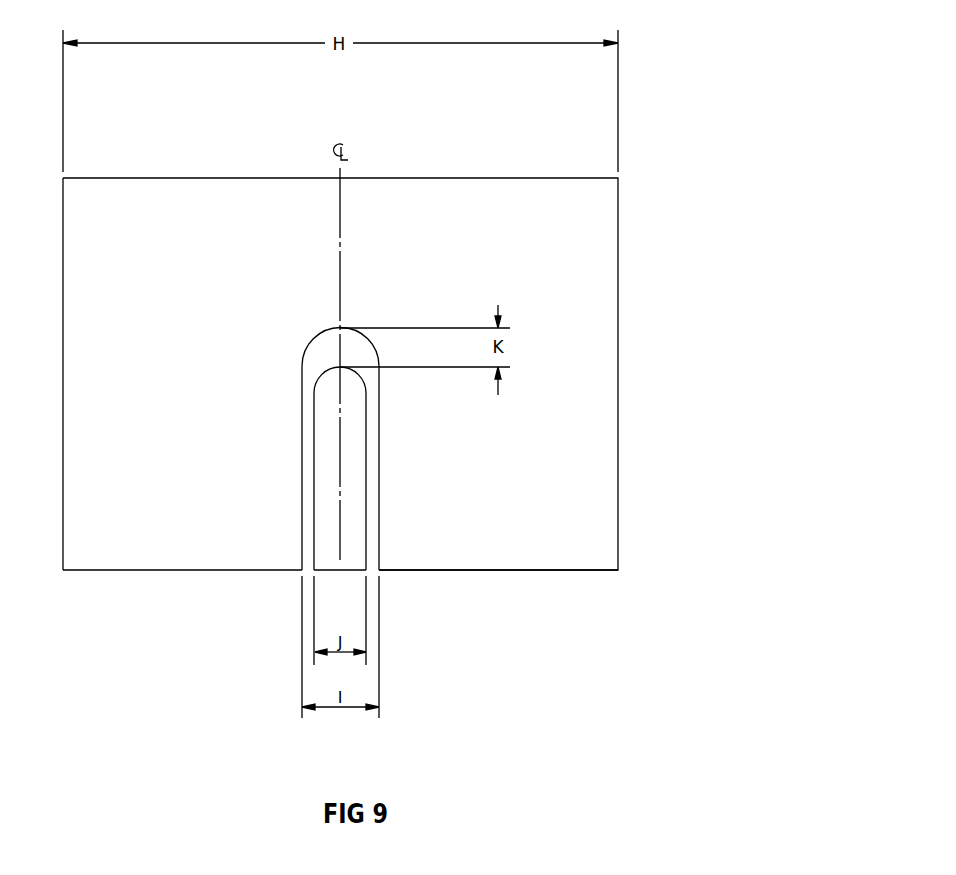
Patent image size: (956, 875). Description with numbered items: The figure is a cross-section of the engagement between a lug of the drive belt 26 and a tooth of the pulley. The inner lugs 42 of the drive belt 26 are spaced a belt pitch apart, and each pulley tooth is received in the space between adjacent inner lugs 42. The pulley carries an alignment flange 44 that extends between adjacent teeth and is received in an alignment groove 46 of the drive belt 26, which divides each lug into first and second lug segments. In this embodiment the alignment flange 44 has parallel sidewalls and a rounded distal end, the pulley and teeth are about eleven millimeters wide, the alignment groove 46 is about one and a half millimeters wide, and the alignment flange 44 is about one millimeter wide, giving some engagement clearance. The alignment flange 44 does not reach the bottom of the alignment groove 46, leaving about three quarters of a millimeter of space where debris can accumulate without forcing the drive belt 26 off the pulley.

The drive belt 26 is at (579, 224).
The inner lugs 42 is at (567, 510).
The alignment flange 44 is at (326, 501).
The alignment groove 46 is at (373, 523).